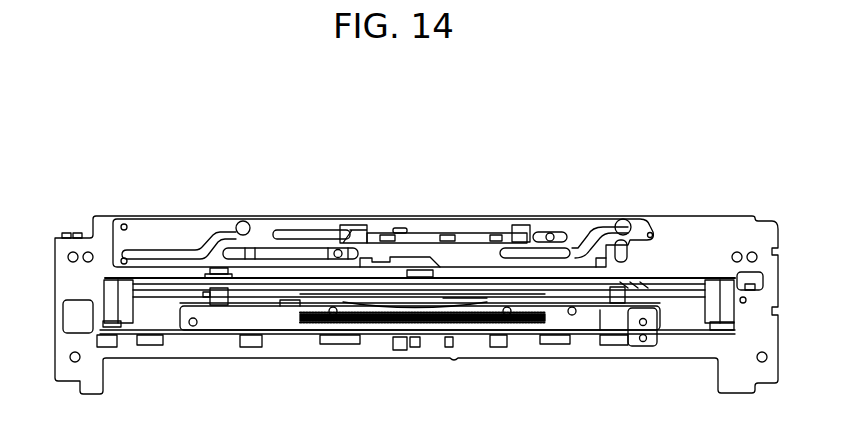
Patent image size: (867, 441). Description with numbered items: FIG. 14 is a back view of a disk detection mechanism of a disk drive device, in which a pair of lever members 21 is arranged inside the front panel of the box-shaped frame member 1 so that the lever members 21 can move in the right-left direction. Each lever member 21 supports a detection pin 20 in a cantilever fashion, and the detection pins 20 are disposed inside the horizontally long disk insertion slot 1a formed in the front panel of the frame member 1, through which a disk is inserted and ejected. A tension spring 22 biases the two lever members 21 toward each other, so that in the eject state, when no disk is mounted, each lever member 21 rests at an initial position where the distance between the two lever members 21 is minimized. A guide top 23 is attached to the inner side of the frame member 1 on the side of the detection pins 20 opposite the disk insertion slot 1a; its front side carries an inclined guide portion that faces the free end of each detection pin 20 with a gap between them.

The frame member 1 is at (693, 216).
The disk insertion slot 1a is at (150, 293).
The detection pin 20 is at (218, 298).
The lever member 21 is at (252, 320).
The tension spring 22 is at (421, 326).
The guide top 23 is at (262, 282).